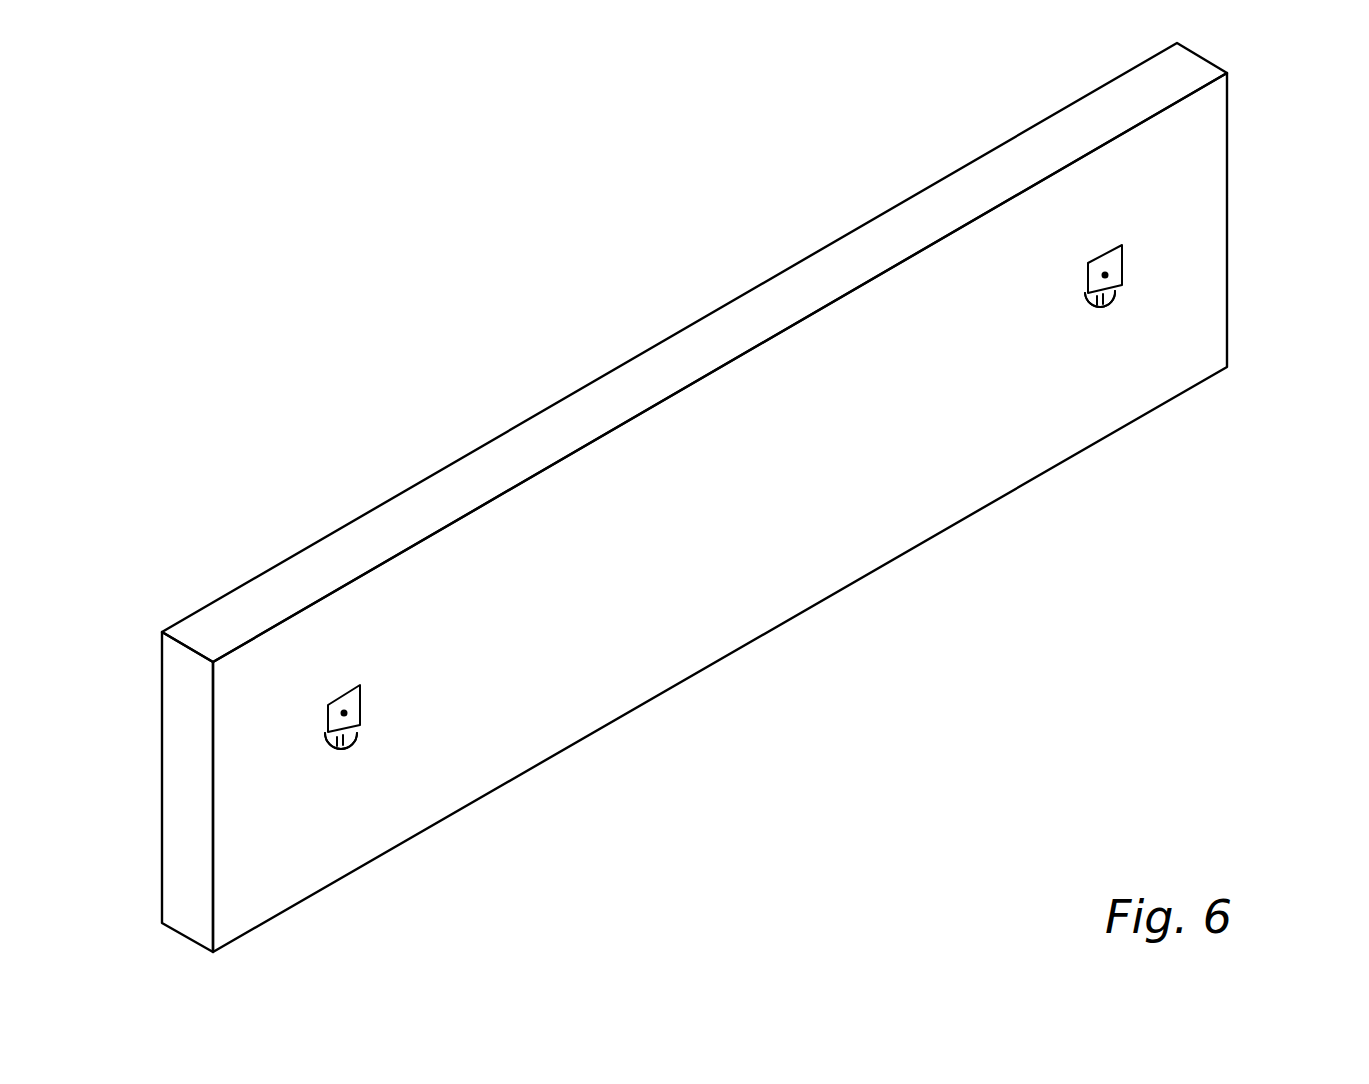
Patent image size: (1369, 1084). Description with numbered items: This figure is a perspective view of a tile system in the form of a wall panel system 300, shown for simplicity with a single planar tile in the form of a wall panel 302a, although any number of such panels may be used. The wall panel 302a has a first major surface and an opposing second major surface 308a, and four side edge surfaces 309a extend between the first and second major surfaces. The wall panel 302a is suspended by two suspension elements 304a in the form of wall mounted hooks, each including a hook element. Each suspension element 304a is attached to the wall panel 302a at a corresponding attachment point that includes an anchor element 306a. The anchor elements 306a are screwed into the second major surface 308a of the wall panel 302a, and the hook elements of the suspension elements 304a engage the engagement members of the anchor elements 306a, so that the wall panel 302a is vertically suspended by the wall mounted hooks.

The wall panel system 300 is at (602, 263).
The wall panel 302a is at (1228, 248).
The suspension element 304a is at (328, 708).
The anchor element 306a is at (327, 735).
The second major surface 308a is at (603, 700).
The side edge surface 309a is at (525, 443).